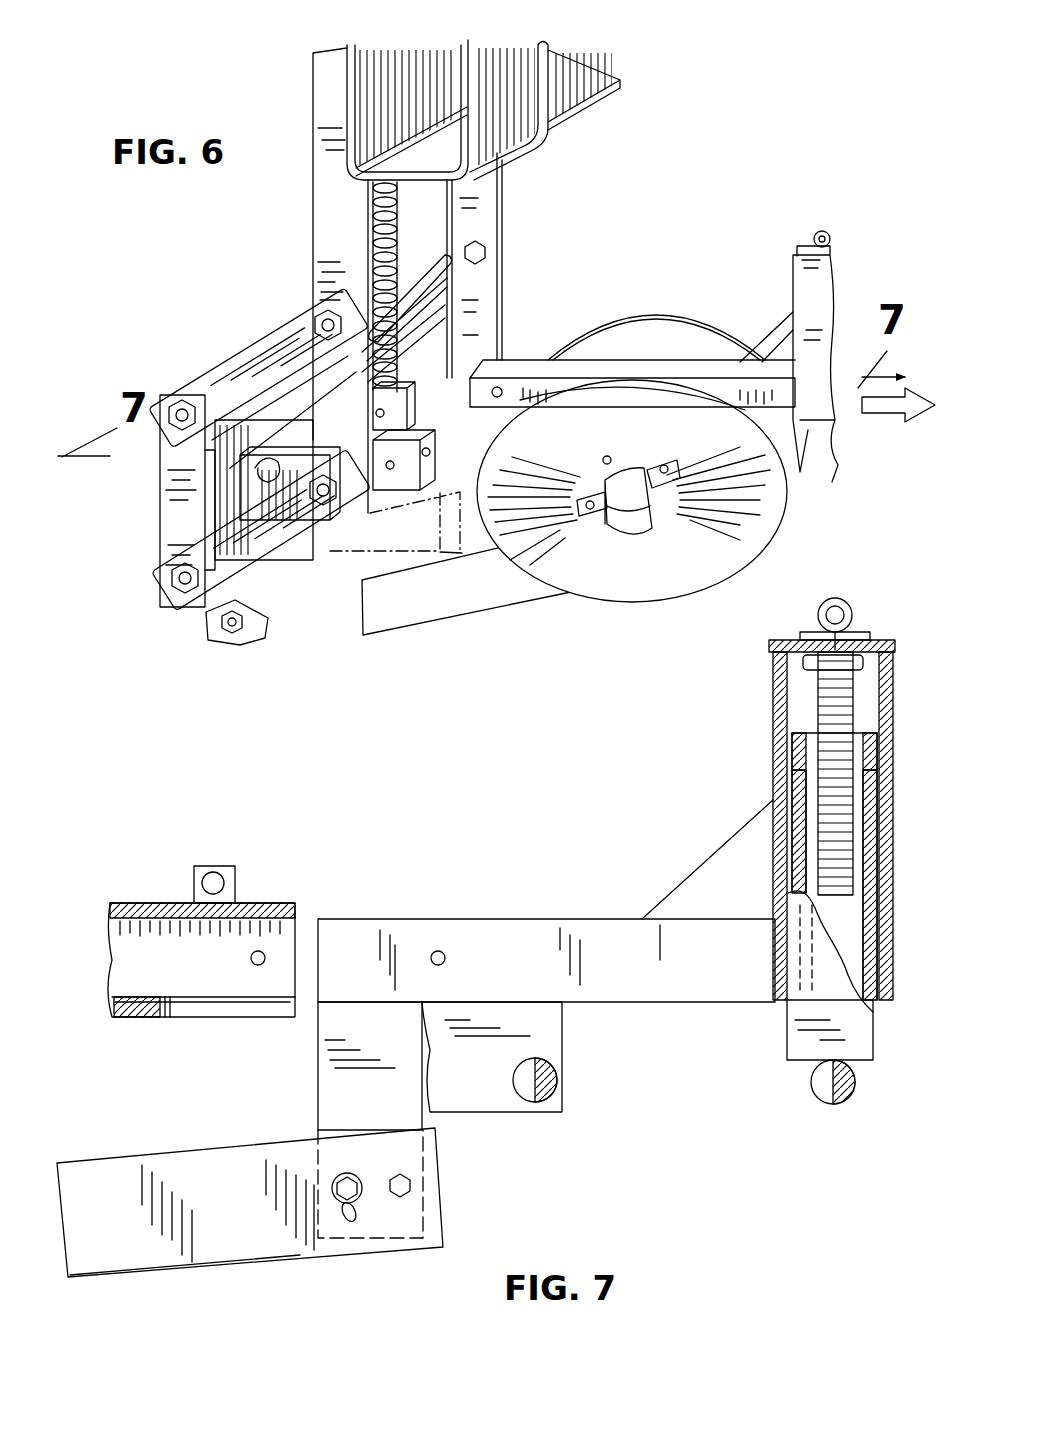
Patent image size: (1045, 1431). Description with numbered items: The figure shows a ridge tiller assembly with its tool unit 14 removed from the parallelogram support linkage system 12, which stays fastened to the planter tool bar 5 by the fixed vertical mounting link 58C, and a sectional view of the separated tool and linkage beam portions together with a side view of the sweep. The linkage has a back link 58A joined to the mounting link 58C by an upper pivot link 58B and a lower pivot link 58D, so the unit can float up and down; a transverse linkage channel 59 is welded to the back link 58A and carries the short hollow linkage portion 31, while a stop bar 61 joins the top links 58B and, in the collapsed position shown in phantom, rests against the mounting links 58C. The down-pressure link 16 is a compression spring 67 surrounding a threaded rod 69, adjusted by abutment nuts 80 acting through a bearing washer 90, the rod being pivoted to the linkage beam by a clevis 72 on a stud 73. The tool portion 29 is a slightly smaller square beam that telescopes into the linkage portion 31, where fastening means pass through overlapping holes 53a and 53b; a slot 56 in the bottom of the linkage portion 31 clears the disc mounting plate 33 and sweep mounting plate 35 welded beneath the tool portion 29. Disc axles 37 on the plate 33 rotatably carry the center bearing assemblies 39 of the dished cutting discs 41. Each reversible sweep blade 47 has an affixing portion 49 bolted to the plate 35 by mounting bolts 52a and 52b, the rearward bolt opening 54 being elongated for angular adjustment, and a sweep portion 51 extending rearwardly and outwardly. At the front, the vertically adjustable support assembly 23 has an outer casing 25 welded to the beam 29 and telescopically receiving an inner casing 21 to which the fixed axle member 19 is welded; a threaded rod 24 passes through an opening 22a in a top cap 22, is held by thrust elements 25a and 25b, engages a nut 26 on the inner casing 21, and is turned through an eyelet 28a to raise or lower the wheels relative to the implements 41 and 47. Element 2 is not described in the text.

In FIG. 6, the channel member 2 is at (545, 75).
In FIG. 6, the tool bar 5 is at (622, 82).
In FIG. 6, the parallelogram support linkage system 12 is at (148, 335).
In FIG. 6, the tool unit 14 is at (699, 490).
In FIG. 6, the down-pressure link 16 is at (405, 228).
In FIG. 7, the fixed axle member 19 is at (840, 1104).
In FIG. 7, the inner casing 21 is at (872, 1038).
In FIG. 7, the top cap 22 is at (892, 642).
In FIG. 7, the opening 22a is at (856, 632).
In FIG. 6, the vertically adjustable support assembly 23 is at (773, 270).
In FIG. 7, the vertically adjustable support assembly 23 is at (791, 862).
In FIG. 7, the threaded rod 24 is at (853, 700).
In FIG. 7, the outer casing 25 is at (888, 746).
In FIG. 7, the thrust element 25a is at (808, 634).
In FIG. 7, the thrust element 25b is at (805, 662).
In FIG. 7, the nut 26 is at (805, 734).
In FIG. 7, the eyelet 28a is at (840, 605).
In FIG. 6, the tool portion 29 is at (562, 456).
In FIG. 7, the tool portion 29 is at (506, 940).
In FIG. 6, the linkage portion 31 is at (302, 506).
In FIG. 7, the linkage portion 31 is at (118, 903).
In FIG. 7, the disc mounting plate 33 is at (556, 1030).
In FIG. 7, the sweep mounting plate 35 is at (338, 1077).
In FIG. 7, the disc axle 37 is at (560, 1080).
In FIG. 6, the center bearing assembly 39 is at (598, 525).
In FIG. 6, the cutting disc 41 is at (656, 578).
In FIG. 6, the sweep blade 47 is at (422, 604).
In FIG. 7, the sweep blade 47 is at (212, 1275).
In FIG. 7, the leading end affixing portion 49 is at (410, 1152).
In FIG. 7, the sweep portion 51 is at (120, 1168).
In FIG. 7, the mounting bolt 52a is at (412, 1187).
In FIG. 7, the mounting bolt 52b is at (332, 1192).
In FIG. 7, the hole 53a is at (438, 950).
In FIG. 7, the hole 53b is at (262, 950).
In FIG. 7, the rearward bolt opening 54 is at (350, 1218).
In FIG. 7, the slot 56 is at (202, 1004).
In FIG. 6, the back link 58A is at (177, 492).
In FIG. 6, the top pivot link 58B is at (234, 376).
In FIG. 6, the mounting link 58C is at (487, 203).
In FIG. 6, the bottom pivot link 58D is at (283, 538).
In FIG. 6, the transverse linkage channel 59 is at (300, 465).
In FIG. 6, the stop bar 61 is at (452, 268).
In FIG. 6, the compression spring 67 is at (384, 246).
In FIG. 6, the threaded rod 69 is at (376, 214).
In FIG. 6, the clevis 72 is at (470, 343).
In FIG. 6, the stud 73 is at (462, 372).
In FIG. 7, the stud 73 is at (215, 866).
In FIG. 6, the adjustable abutment nut 80 is at (453, 334).
In FIG. 6, the bearing washer 90 is at (456, 295).